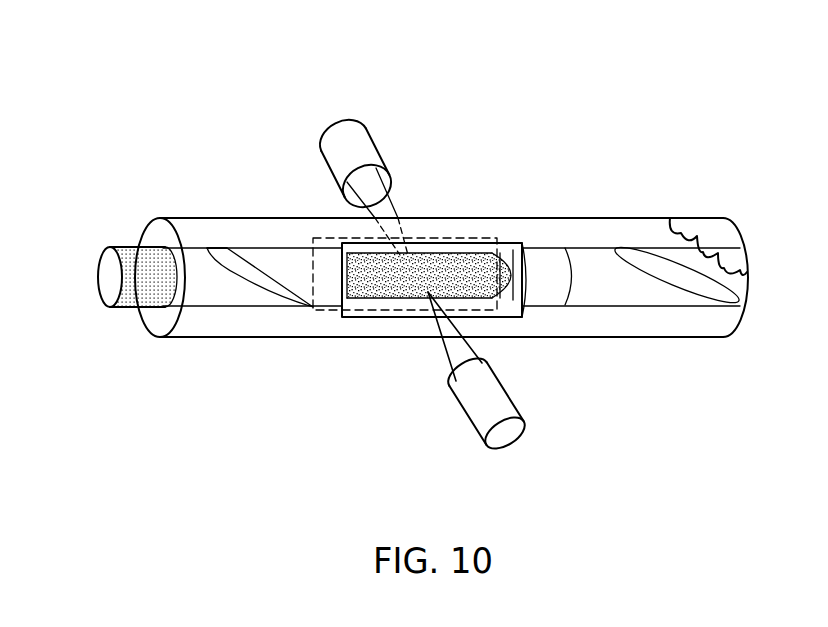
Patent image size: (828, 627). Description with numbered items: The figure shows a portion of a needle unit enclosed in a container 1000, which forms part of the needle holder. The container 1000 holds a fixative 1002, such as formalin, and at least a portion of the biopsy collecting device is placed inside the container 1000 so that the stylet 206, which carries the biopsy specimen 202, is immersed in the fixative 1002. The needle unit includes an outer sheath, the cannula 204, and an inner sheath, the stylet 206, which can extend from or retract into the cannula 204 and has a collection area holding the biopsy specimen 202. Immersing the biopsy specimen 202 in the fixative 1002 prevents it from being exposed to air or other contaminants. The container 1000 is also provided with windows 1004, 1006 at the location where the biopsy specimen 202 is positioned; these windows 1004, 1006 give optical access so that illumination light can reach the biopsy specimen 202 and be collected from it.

The container 1000 is at (158, 61).
The fixative 1002 is at (553, 224).
The window 1004 is at (308, 272).
The window 1006 is at (513, 317).
The biopsy specimen 202 is at (380, 288).
The cannula 204 is at (137, 300).
The stylet 206 is at (662, 295).